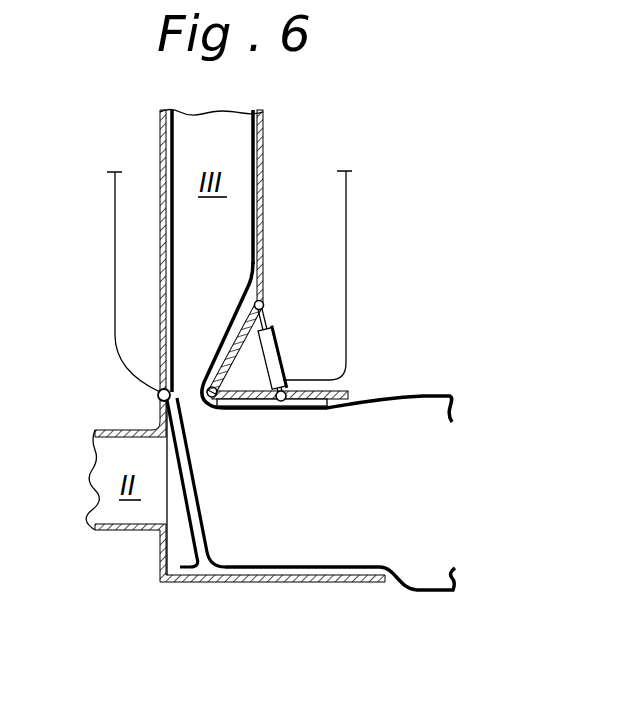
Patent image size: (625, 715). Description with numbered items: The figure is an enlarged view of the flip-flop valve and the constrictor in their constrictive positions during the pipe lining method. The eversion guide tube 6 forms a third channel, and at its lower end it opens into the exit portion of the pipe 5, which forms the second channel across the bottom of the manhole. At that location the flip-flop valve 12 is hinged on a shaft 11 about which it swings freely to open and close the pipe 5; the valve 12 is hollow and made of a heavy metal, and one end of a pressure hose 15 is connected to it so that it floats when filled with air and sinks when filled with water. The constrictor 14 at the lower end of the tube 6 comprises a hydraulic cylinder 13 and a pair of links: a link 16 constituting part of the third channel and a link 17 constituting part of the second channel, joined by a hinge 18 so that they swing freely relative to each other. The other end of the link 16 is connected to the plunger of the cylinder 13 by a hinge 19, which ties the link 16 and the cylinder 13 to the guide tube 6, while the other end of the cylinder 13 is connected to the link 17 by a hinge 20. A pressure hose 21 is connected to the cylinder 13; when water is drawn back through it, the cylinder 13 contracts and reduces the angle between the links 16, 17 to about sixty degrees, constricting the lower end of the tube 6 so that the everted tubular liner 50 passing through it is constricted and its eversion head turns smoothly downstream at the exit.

The pipe 5 is at (279, 584).
The eversion guide tube 6 is at (264, 180).
The shaft 11 is at (158, 397).
The flip-flop valve 12 is at (181, 569).
The hydraulic cylinder 13 is at (286, 361).
The constrictor 14 is at (289, 320).
The pressure hose 15 is at (115, 263).
The link 16 is at (220, 374).
The link 17 is at (324, 416).
The hinge 18 is at (215, 413).
The hinge 19 is at (262, 301).
The hinge 20 is at (273, 414).
The pressure hose 21 is at (350, 238).
The tubular liner 50 is at (236, 321).